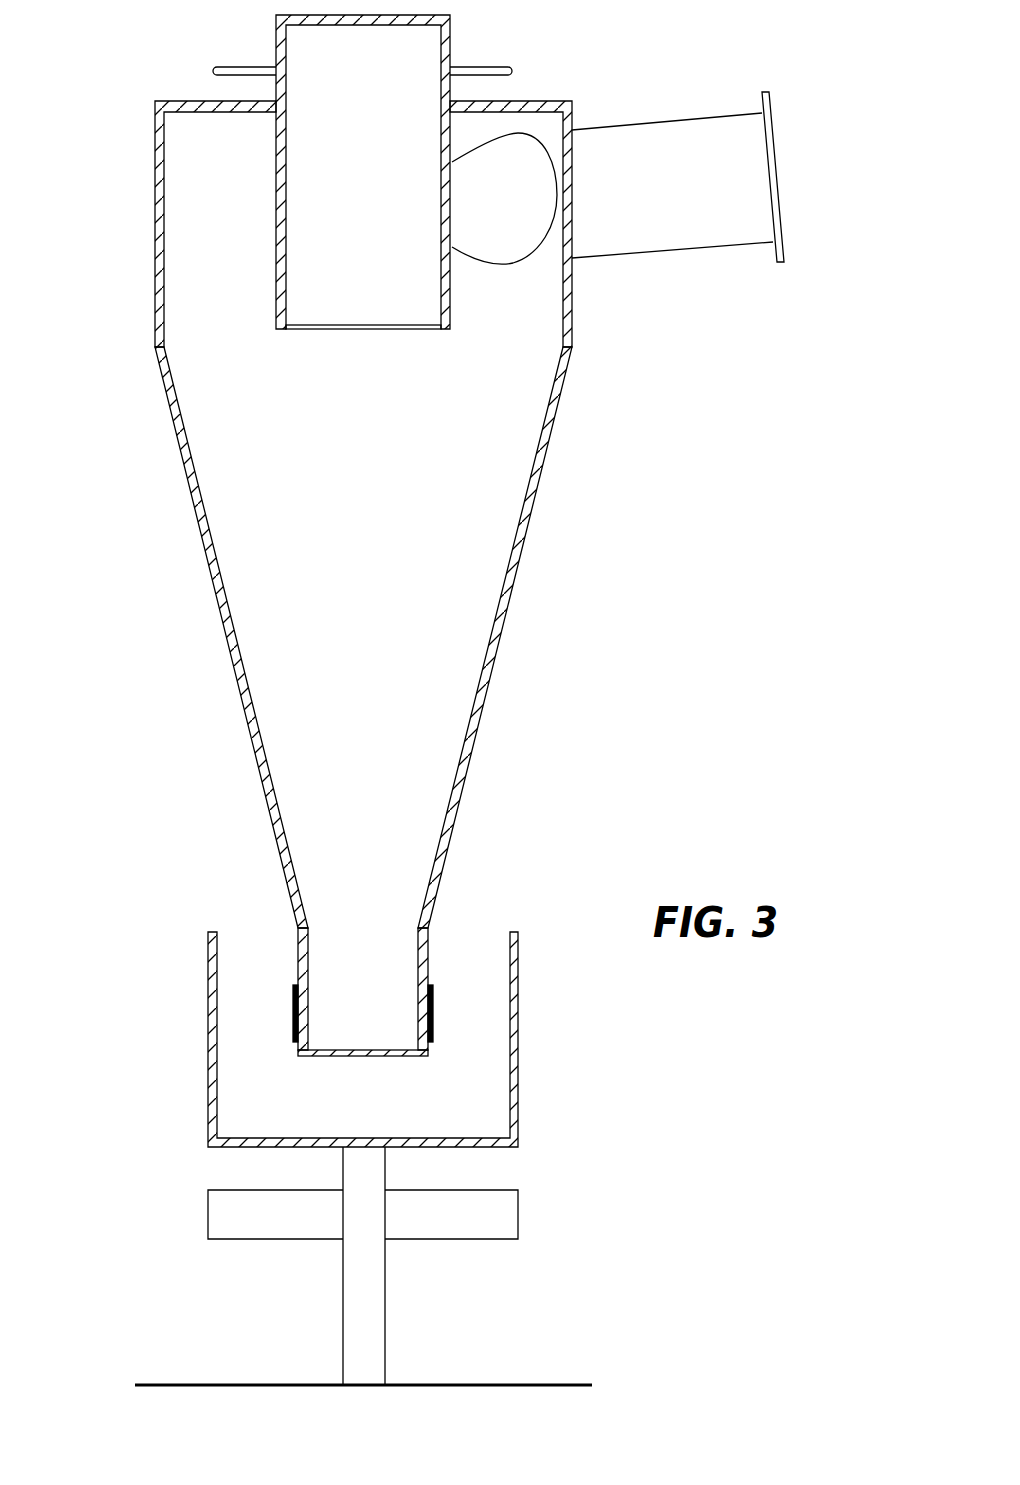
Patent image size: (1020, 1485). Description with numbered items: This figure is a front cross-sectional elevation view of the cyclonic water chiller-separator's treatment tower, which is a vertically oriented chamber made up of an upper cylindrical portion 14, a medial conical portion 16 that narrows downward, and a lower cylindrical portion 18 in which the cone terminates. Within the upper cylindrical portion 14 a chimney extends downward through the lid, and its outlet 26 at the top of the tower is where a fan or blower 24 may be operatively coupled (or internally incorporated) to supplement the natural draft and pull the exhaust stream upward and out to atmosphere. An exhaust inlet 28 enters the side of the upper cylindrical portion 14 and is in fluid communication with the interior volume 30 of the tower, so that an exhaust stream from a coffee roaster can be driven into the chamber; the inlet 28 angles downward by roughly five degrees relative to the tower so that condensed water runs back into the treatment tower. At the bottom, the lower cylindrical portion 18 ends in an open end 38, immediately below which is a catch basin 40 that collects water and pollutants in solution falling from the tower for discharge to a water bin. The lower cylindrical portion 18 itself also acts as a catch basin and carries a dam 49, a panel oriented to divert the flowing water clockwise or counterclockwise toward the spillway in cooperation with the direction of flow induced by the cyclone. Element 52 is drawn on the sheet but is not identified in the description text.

The upper cylindrical portion 14 is at (155, 247).
The medial conical portion 16 is at (197, 527).
The lower cylindrical portion 18 is at (298, 975).
The fan or blower 24 is at (276, 30).
The outlet 26 is at (418, 55).
The exhaust inlet 28 is at (638, 123).
The interior volume 30 is at (520, 330).
The open end 38 is at (420, 1056).
The catch basin 40 is at (518, 982).
The dam 49 is at (293, 1010).
The right pipe connection 52 is at (478, 67).